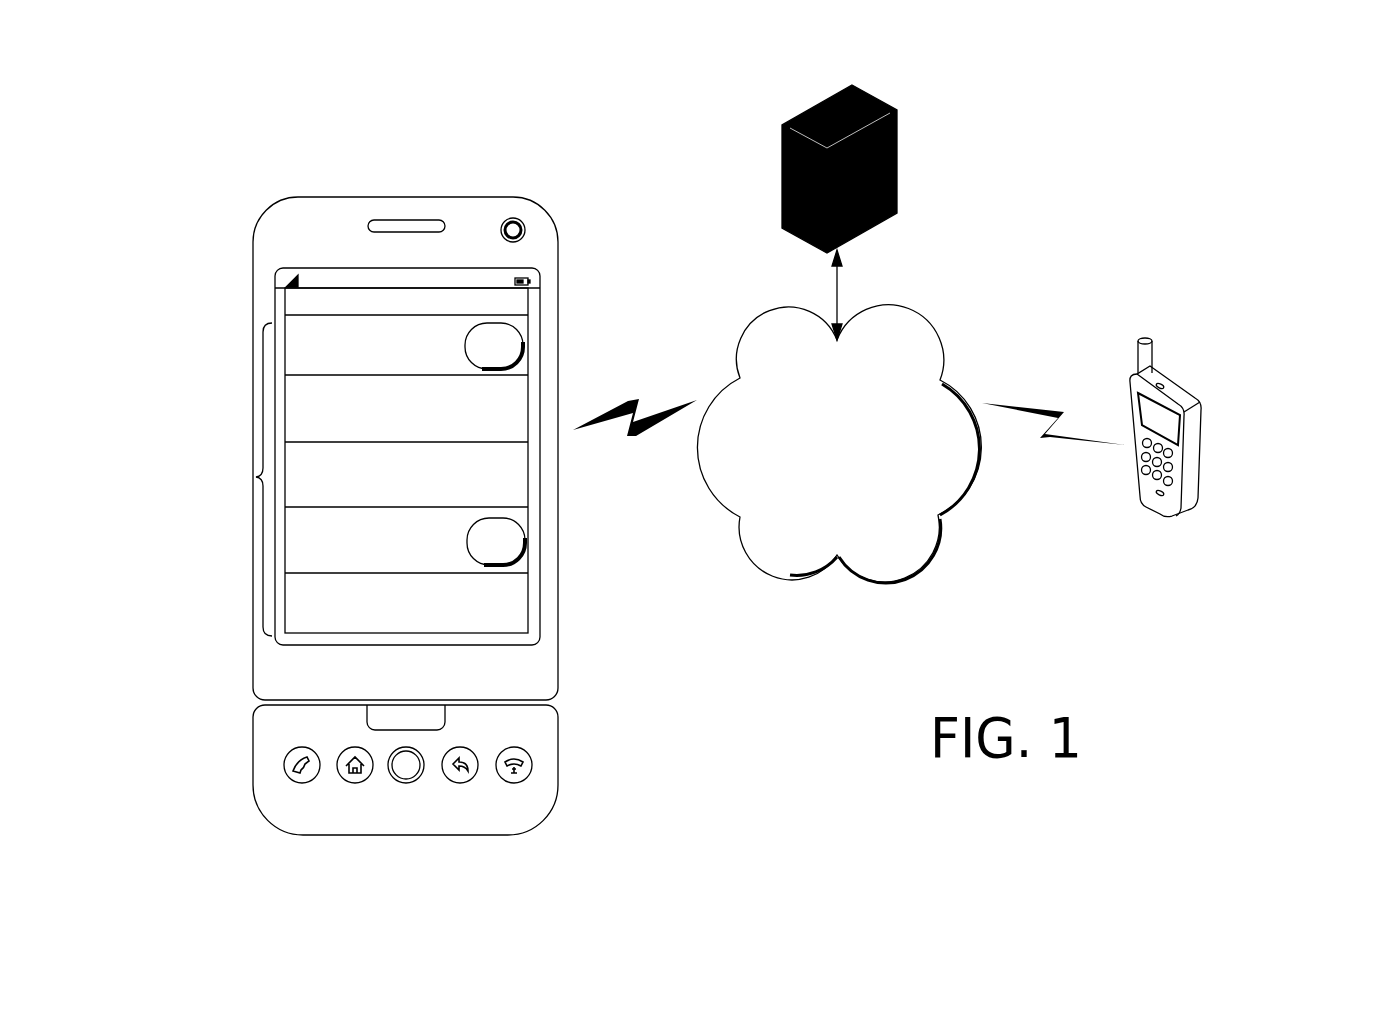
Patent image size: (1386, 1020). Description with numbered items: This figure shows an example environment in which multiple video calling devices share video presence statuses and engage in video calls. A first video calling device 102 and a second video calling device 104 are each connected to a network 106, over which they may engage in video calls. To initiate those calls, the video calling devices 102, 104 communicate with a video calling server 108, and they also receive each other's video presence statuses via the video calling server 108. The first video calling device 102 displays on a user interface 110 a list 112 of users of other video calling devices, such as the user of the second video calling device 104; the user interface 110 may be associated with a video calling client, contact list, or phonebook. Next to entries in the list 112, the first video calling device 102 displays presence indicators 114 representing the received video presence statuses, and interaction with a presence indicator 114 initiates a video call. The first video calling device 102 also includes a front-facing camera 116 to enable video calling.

The first video calling device 102 is at (290, 197).
The second video calling device 104 is at (1152, 342).
The network 106 is at (907, 459).
The video calling server 108 is at (897, 110).
The user interface 110 is at (315, 303).
The list 112 is at (256, 477).
The presence indicator 114 is at (492, 345).
The front-facing camera 116 is at (515, 228).